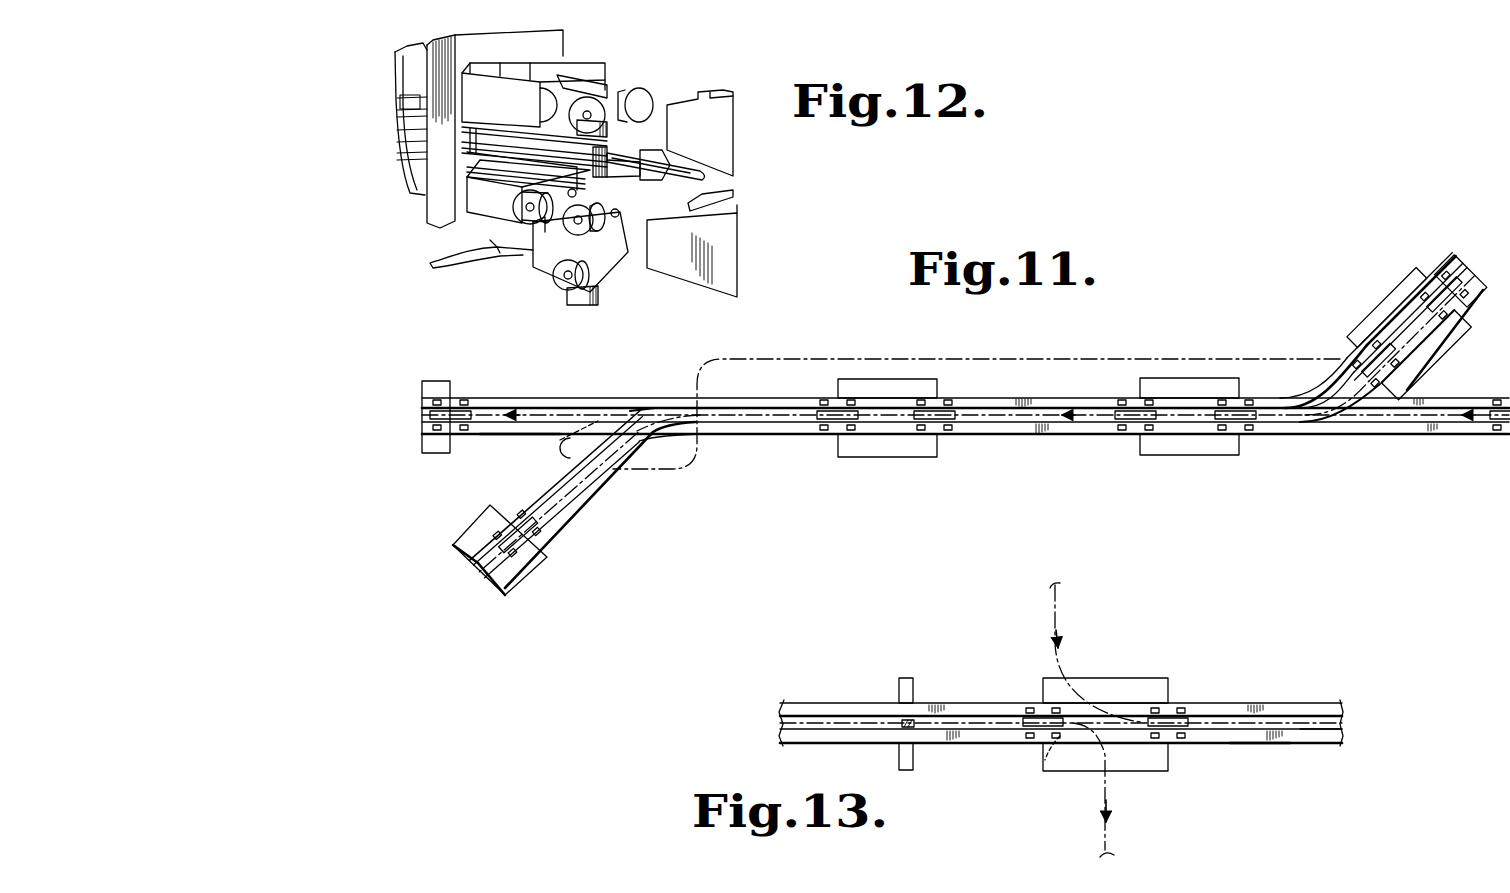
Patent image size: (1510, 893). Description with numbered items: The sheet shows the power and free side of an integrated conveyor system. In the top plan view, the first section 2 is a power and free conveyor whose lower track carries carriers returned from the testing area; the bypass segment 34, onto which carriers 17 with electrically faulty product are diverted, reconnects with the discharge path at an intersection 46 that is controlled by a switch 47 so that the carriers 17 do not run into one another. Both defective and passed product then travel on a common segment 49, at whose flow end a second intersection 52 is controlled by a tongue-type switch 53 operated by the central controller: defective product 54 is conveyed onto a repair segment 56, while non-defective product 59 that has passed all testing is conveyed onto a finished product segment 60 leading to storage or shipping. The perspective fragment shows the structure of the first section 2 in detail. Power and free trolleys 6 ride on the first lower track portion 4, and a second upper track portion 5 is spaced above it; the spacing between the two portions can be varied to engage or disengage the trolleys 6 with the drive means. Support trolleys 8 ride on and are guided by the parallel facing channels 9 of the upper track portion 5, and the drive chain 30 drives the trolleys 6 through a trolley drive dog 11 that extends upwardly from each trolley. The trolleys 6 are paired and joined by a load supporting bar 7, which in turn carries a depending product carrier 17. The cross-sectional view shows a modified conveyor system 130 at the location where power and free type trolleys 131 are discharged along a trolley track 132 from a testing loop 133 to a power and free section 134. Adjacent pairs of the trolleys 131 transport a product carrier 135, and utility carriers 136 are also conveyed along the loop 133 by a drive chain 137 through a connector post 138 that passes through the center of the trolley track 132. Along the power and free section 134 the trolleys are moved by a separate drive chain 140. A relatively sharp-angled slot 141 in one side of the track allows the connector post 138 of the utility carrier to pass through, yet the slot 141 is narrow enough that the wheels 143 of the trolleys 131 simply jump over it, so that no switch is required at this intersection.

In FIG. 12, the first section 2 is at (688, 280).
In FIG. 12, the first lower track portion 4 is at (740, 192).
In FIG. 12, the second upper track portion 5 is at (727, 168).
In FIG. 12, the power and free trolleys 6 is at (543, 247).
In FIG. 11, the power and free trolleys 6 is at (468, 400).
In FIG. 12, the load supporting bar 7 is at (598, 295).
In FIG. 12, the support trolleys 8 is at (616, 73).
In FIG. 12, the parallel facing channels 9 is at (697, 100).
In FIG. 12, the trolley drive dog 11 is at (520, 196).
In FIG. 11, the product carrier 17 is at (905, 378).
In FIG. 12, the drive chain 30 is at (668, 178).
In FIG. 11, the drive chain 30 is at (746, 352).
In FIG. 11, the bypass segment 34 is at (1440, 263).
In FIG. 11, the intersection 46 is at (1344, 440).
In FIG. 11, the switch 47 is at (1365, 414).
In FIG. 11, the common segment 49 is at (1006, 396).
In FIG. 11, the second intersection 52 is at (602, 394).
In FIG. 11, the tongue-type switch 53 is at (647, 404).
In FIG. 11, the defective product 54 is at (530, 583).
In FIG. 11, the repair segment 56 is at (580, 498).
In FIG. 11, the non-defective product 59 is at (447, 383).
In FIG. 11, the finished product segment 60 is at (512, 438).
In FIG. 13, the modified conveyor system 130 is at (1015, 748).
In FIG. 13, the power and free type trolleys 131 is at (1030, 707).
In FIG. 13, the trolley track 132 is at (1305, 702).
In FIG. 13, the testing loop 133 is at (852, 702).
In FIG. 13, the power and free section 134 is at (1282, 745).
In FIG. 13, the product carrier 135 is at (1168, 770).
In FIG. 13, the utility carriers 136 is at (913, 768).
In FIG. 13, the drive chain 137 is at (866, 728).
In FIG. 13, the connector post 138 is at (912, 718).
In FIG. 13, the drive chain 140 is at (1316, 731).
In FIG. 13, the sharp-angled slot 141 is at (1097, 738).
In FIG. 13, the wheels 143 is at (1034, 767).